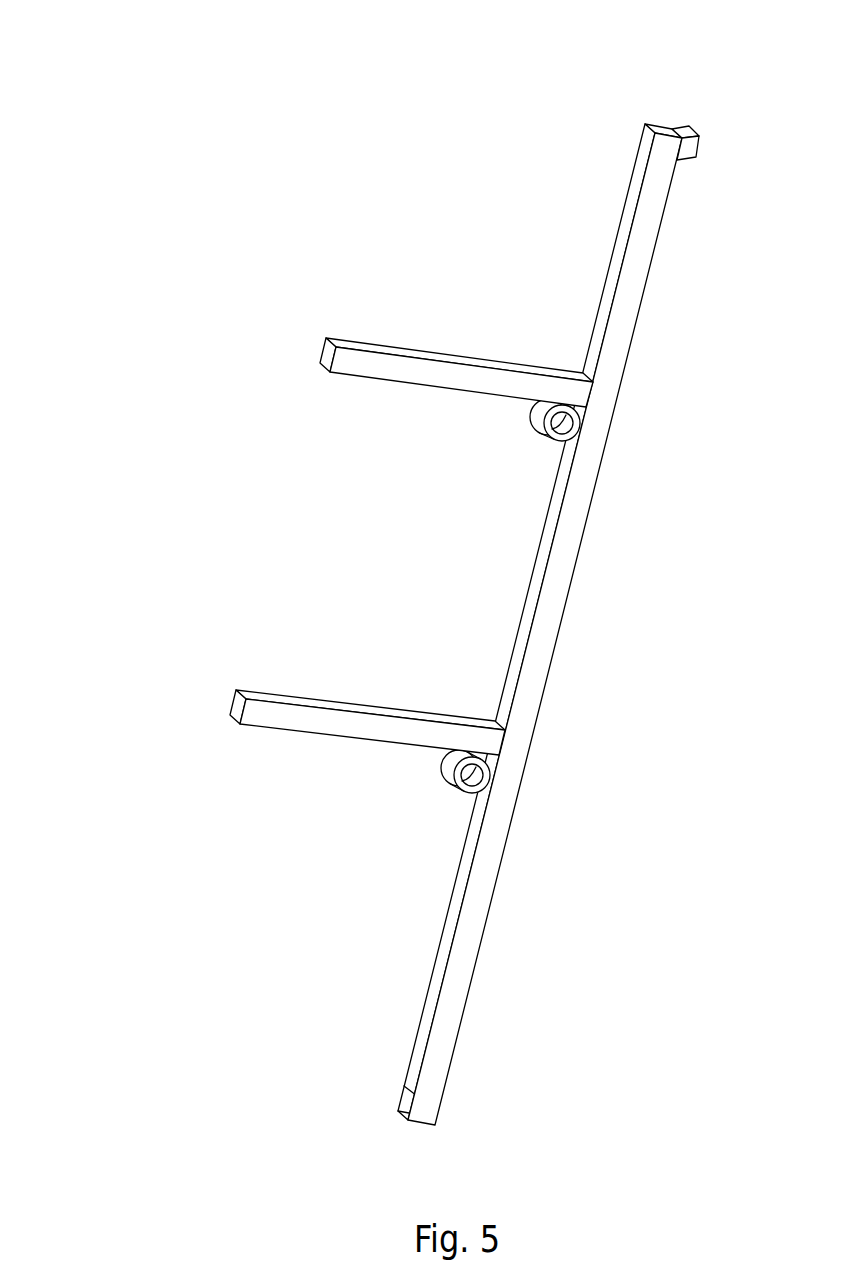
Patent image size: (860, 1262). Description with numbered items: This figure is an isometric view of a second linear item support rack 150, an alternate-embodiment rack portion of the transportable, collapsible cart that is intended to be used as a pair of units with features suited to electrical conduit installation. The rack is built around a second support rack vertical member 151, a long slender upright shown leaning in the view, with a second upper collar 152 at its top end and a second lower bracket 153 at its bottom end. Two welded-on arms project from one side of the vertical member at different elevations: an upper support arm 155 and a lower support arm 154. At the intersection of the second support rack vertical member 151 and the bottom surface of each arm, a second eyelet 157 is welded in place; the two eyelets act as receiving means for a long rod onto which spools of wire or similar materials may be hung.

The second linear item support rack 150 is at (397, 566).
The second support rack vertical member 151 is at (547, 635).
The second upper collar 152 is at (689, 147).
The second lower bracket 153 is at (427, 1108).
The lower support arm 154 is at (240, 708).
The upper support arm 155 is at (330, 350).
The second eyelet 157 is at (537, 417).